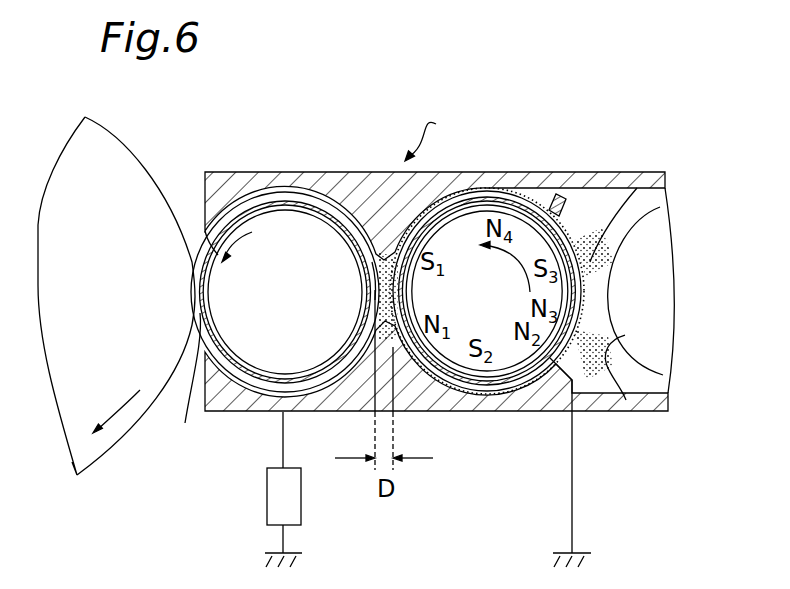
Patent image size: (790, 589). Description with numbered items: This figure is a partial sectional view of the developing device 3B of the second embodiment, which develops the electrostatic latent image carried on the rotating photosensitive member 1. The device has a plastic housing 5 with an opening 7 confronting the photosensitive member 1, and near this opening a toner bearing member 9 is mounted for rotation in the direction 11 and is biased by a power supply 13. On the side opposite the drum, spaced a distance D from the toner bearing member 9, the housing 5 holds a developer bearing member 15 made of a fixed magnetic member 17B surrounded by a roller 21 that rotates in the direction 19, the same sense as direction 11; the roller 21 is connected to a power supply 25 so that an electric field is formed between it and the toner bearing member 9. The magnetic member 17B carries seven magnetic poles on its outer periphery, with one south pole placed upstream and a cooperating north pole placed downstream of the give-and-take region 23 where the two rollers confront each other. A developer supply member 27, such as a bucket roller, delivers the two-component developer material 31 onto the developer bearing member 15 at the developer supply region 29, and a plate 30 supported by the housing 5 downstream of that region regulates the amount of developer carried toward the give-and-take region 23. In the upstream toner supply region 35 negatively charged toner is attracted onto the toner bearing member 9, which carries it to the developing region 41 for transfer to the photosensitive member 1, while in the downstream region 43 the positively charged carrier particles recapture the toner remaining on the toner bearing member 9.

The photosensitive member 1 is at (150, 151).
The developing device 3B is at (435, 133).
The housing 5 is at (358, 188).
The opening 7 is at (208, 237).
The toner bearing member 9 is at (287, 203).
The rotational direction of toner bearing member 11 is at (252, 232).
The power supply 13 is at (267, 508).
The developer bearing member 15 is at (510, 197).
The magnetic member 17B is at (511, 193).
The rotational direction of developer bearing member 19 is at (515, 262).
The roller 21 is at (586, 265).
The give-and-take region 23 is at (368, 296).
The power supply 25 is at (566, 552).
The developer supply member 27 is at (660, 300).
The developer supply region 29 is at (640, 205).
The plate 30 is at (557, 198).
The developer material 31 is at (626, 400).
The toner supply region 35 is at (372, 271).
The developing region 41 is at (190, 384).
The region 43 is at (366, 318).